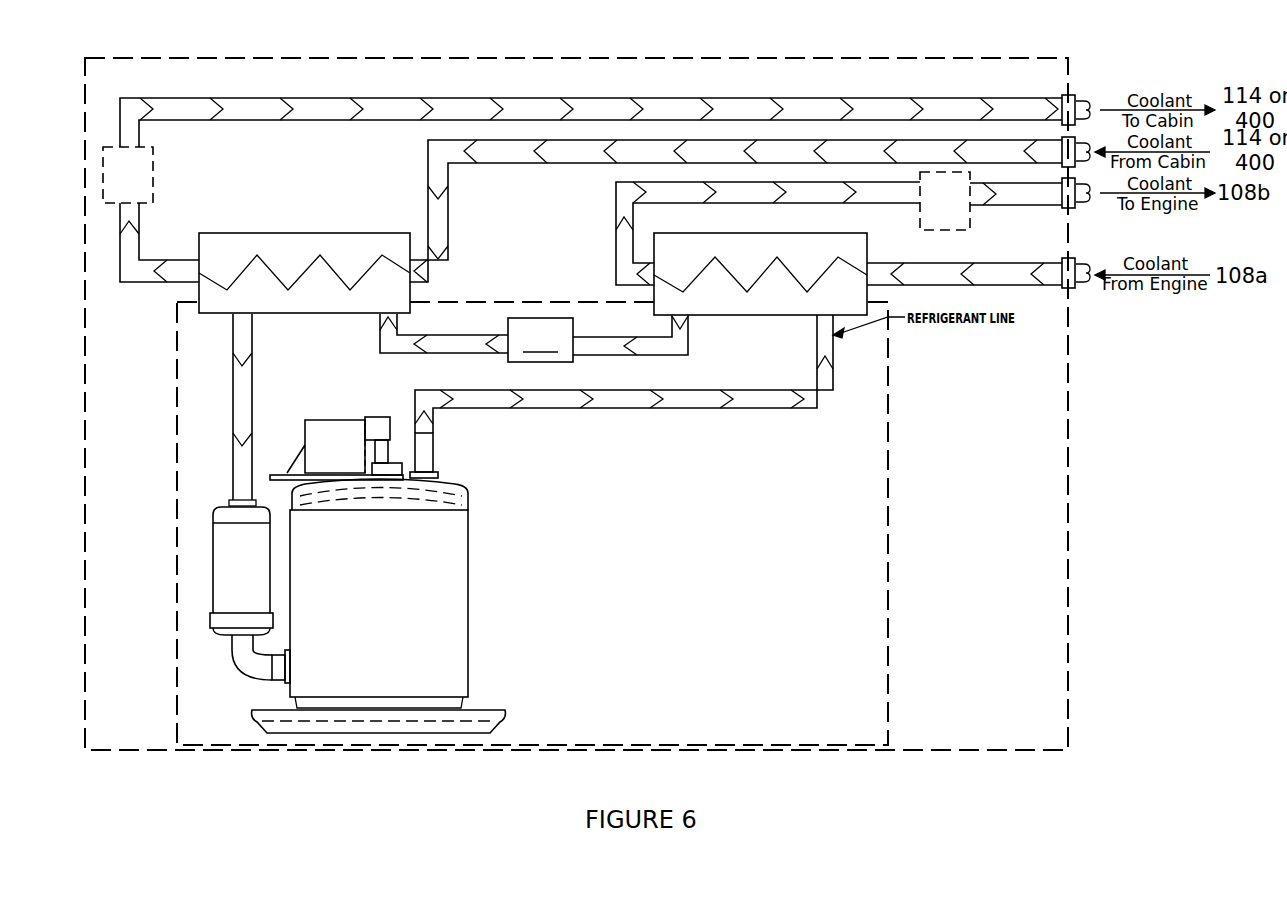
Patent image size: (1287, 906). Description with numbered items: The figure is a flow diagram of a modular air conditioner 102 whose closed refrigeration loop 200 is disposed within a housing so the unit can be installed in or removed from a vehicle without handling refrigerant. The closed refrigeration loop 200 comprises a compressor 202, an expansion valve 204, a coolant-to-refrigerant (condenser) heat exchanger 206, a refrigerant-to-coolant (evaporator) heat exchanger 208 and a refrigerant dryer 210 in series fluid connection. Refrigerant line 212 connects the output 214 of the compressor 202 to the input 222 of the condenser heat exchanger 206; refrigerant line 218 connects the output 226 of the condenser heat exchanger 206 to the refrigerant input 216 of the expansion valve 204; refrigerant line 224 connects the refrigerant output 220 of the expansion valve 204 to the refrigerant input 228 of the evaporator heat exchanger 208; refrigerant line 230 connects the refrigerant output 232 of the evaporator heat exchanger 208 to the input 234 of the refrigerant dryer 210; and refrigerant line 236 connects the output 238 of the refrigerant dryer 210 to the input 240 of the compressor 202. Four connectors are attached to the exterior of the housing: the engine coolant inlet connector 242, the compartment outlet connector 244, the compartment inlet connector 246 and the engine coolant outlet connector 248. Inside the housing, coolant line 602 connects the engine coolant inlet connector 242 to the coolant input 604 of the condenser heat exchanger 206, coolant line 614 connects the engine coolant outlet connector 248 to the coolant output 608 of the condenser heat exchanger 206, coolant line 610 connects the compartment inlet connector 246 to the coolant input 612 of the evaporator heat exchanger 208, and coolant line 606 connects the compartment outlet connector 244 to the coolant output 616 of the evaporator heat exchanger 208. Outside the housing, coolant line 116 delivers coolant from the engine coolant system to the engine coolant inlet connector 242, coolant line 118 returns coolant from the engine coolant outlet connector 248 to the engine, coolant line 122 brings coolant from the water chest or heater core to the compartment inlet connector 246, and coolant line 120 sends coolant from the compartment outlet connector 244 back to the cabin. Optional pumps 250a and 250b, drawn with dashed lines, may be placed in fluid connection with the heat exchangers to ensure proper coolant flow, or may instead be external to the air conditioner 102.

The modular air conditioner 102 is at (1152, 50).
The closed refrigeration loop 200 is at (888, 470).
The compressor 202 is at (458, 582).
The expansion valve 204 is at (574, 351).
The coolant-to-refrigerant (condenser) heat exchanger 206 is at (847, 240).
The refrigerant-to-coolant (evaporator) heat exchanger 208 is at (358, 242).
The refrigerant dryer 210 is at (218, 572).
The refrigerant line 212 is at (624, 375).
The output of the compressor 214 is at (425, 457).
The refrigerant input of the expansion valve 216 is at (661, 350).
The refrigerant line 218 is at (661, 351).
The refrigerant output of the expansion valve 220 is at (507, 357).
The input of the condenser heat exchanger 222 is at (827, 318).
The refrigerant line 224 is at (431, 348).
The output of the condenser heat exchanger 226 is at (682, 322).
The refrigerant input of the evaporator heat exchanger 228 is at (415, 348).
The refrigerant line 230 is at (249, 410).
The refrigerant output of the evaporator heat exchanger 232 is at (249, 410).
The dryer inlet 234 is at (240, 490).
The refrigerant line 236 is at (255, 665).
The output of the refrigerant dryer 238 is at (242, 637).
The input of the compressor 240 is at (277, 672).
The engine coolant inlet connector 242 is at (1073, 288).
The compartment outlet connector 244 is at (1062, 97).
The compartment inlet connector 246 is at (1062, 193).
The engine coolant outlet connector 248 is at (1062, 147).
The pump 250a is at (930, 233).
The pump 250b is at (150, 183).
The coolant line 602 is at (995, 277).
The coolant input of the condenser heat exchanger 604 is at (965, 261).
The coolant line 606 is at (512, 110).
The coolant output of the condenser heat exchanger 608 is at (653, 270).
The coolant line 610 is at (736, 234).
The coolant input of the evaporator heat exchanger 612 is at (413, 293).
The coolant line 614 is at (997, 205).
The coolant output of the evaporator heat exchanger 616 is at (198, 257).
The coolant line 120 is at (1085, 100).
The coolant line 122 is at (1085, 148).
The coolant line 118 is at (1085, 202).
The coolant line 116 is at (1085, 273).